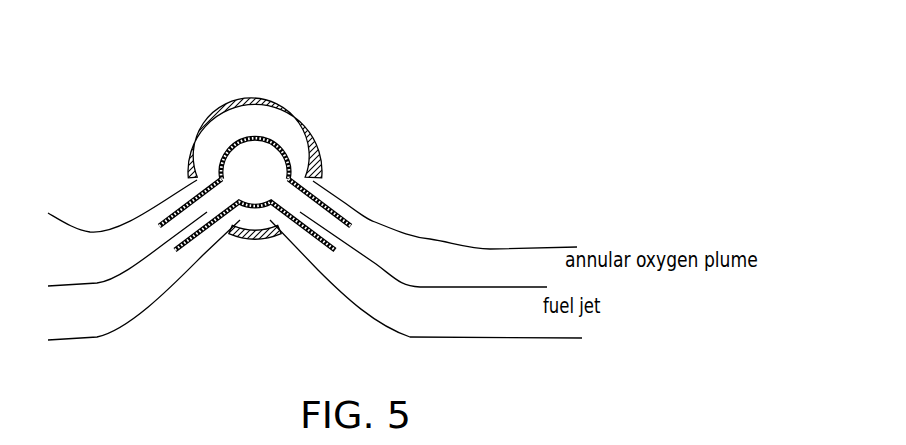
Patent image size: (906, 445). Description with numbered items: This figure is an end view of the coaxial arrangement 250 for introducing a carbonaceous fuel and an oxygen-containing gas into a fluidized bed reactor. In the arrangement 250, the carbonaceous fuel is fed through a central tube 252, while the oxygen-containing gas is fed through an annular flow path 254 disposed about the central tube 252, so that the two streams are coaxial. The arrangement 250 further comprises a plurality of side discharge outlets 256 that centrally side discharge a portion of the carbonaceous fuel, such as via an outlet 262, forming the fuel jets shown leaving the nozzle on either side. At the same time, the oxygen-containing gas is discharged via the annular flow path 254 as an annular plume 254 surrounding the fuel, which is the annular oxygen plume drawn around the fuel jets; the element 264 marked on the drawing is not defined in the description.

The coaxial arrangement 250 is at (135, 114).
The central tube 252 is at (230, 132).
The annular flow path 254 is at (252, 125).
The side discharge outlets 256 is at (206, 258).
The outlet 262 is at (178, 209).
The annular oxygen plume 264 is at (335, 195).